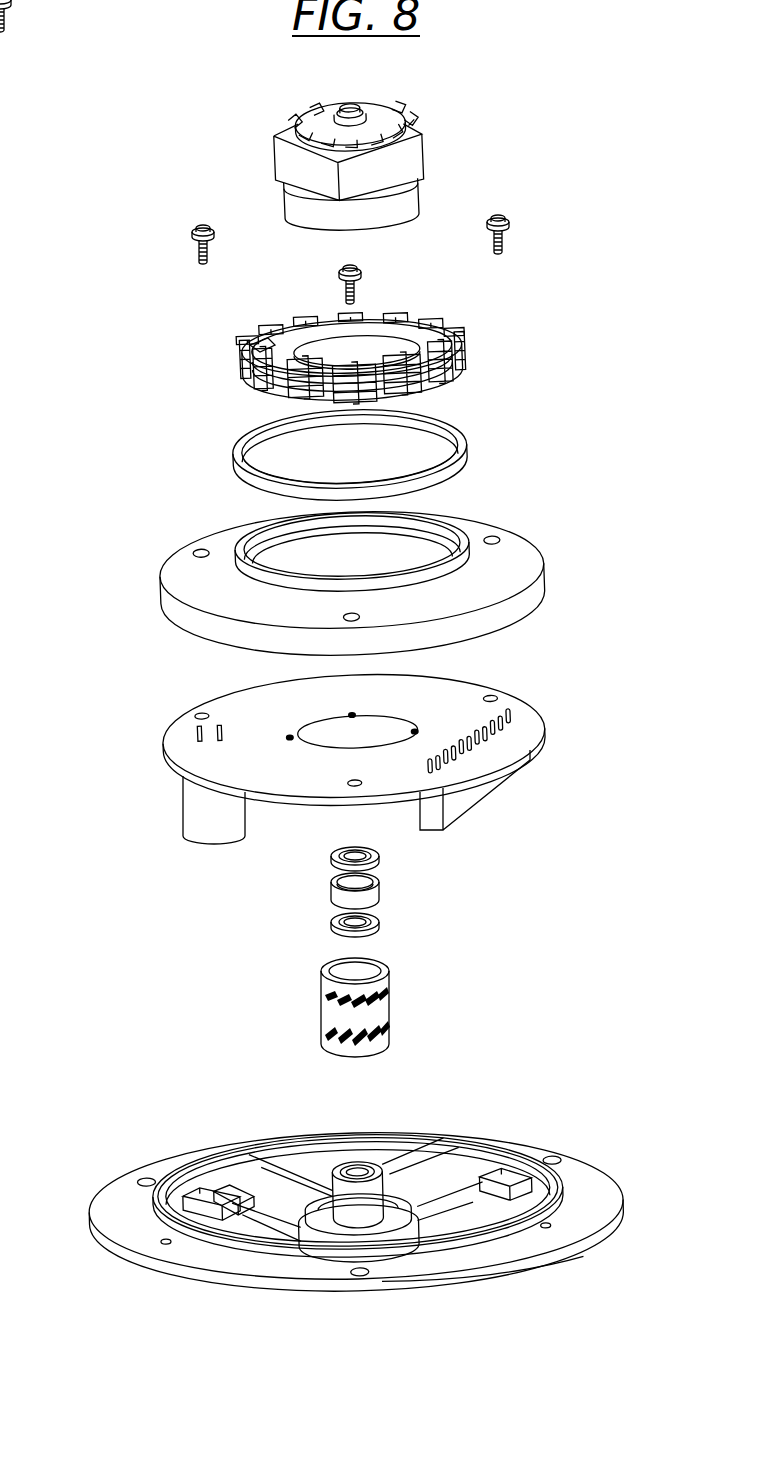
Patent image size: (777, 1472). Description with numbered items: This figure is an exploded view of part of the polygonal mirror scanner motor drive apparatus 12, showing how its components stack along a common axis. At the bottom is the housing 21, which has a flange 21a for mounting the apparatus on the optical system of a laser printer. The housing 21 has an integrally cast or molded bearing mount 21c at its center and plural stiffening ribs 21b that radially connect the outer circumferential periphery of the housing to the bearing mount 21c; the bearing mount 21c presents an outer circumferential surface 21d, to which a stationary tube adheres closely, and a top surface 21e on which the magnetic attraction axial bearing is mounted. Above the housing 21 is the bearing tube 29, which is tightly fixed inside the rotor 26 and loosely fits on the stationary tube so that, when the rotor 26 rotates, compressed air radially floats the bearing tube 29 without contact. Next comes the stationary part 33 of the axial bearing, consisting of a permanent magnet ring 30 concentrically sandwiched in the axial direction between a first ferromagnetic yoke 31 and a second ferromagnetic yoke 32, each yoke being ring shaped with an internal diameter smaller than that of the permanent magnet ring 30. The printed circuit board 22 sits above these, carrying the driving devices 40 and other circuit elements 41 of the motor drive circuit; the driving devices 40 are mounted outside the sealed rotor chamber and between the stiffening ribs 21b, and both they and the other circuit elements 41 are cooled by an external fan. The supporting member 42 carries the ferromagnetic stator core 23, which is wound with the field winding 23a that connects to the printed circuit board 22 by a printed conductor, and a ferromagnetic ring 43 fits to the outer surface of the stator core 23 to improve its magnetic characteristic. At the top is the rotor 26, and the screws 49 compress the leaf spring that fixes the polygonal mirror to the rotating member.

The polygonal mirror scanner motor drive apparatus 12 is at (577, 155).
The rotor 26 is at (428, 166).
The screws 49 is at (214, 262).
The ferromagnetic stator core 23 is at (245, 368).
The field winding 23a is at (260, 352).
The ferromagnetic ring 43 is at (470, 458).
The supporting member 42 is at (546, 578).
The printed circuit board 22 is at (534, 738).
The other circuit elements 41 is at (192, 814).
The driving devices 40 is at (458, 808).
The stationary part 33 is at (400, 846).
The first ferromagnetic yoke 31 is at (330, 860).
The permanent magnet ring 30 is at (330, 896).
The second ferromagnetic yoke 32 is at (330, 936).
The bearing tube 29 is at (394, 1000).
The housing 21 is at (590, 1184).
The flange 21a is at (572, 1262).
The stiffening ribs 21b is at (188, 1190).
The bearing mount 21c is at (405, 1165).
The outer circumferential surface 21d is at (232, 1168).
The top surface 21e is at (338, 1182).